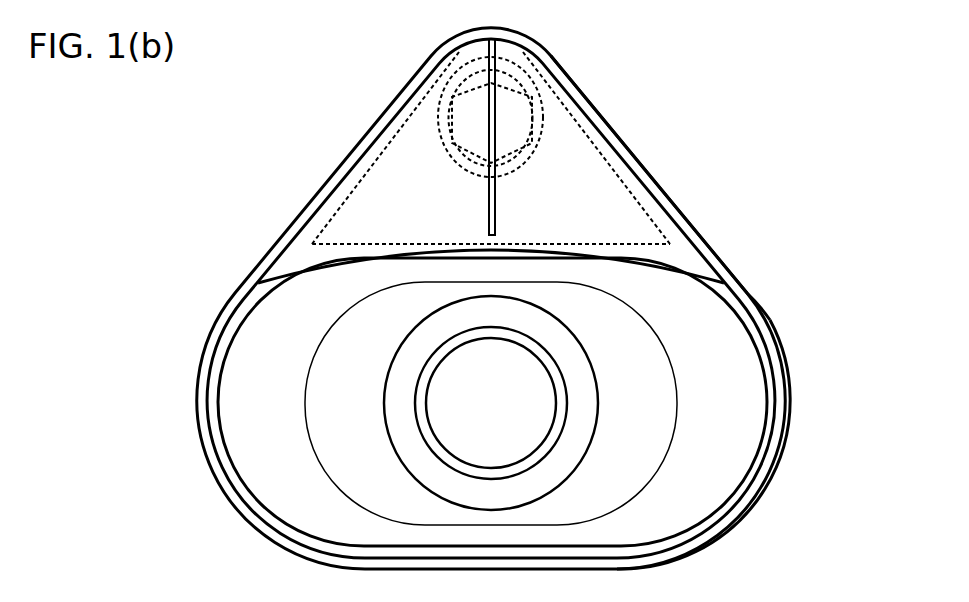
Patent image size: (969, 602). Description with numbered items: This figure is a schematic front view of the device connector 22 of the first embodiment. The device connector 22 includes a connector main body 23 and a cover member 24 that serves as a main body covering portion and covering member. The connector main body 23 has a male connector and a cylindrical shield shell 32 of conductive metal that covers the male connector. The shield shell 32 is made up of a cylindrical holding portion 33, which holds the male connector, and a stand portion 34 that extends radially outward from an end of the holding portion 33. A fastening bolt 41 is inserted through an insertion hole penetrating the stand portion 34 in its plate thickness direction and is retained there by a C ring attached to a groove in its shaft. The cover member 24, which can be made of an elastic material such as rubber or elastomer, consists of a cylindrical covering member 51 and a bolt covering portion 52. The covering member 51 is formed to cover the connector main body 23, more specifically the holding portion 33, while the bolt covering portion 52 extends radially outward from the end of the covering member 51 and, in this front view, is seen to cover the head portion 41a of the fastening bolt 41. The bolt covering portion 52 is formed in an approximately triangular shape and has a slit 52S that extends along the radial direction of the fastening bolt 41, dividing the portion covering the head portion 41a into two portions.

The device connector 22 is at (793, 101).
The connector main body 23 is at (657, 181).
The cover member 24 is at (691, 240).
The shield shell 32 is at (731, 270).
The holding portion 33 is at (783, 380).
The stand portion 34 is at (628, 144).
The fastening bolt 41 is at (570, 117).
The head portion 41a is at (542, 116).
The covering member 51 is at (737, 342).
The bolt covering portion 52 is at (549, 60).
The slit 52S is at (486, 208).